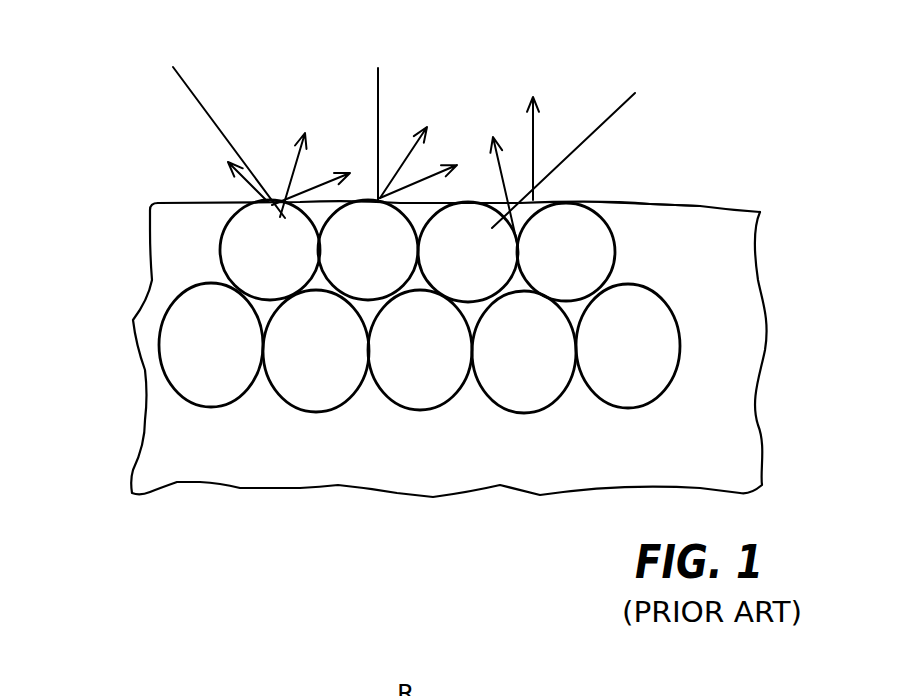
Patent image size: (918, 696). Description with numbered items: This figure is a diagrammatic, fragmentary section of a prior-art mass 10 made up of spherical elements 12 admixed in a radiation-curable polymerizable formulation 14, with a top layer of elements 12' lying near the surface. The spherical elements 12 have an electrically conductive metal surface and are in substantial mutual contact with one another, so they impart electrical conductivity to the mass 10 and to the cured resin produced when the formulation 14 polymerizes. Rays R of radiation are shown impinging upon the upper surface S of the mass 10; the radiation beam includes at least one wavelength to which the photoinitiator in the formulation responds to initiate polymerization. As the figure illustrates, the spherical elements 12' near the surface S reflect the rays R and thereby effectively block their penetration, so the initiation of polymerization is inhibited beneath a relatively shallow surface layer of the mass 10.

The mass 10 is at (123, 307).
The spherical elements 12 is at (419, 372).
The top layer of elements 12' is at (399, 251).
The radiation-curable polymerizable formulation 14 is at (210, 448).
The rays of radiation R is at (410, 139).
The upper surface S is at (740, 207).